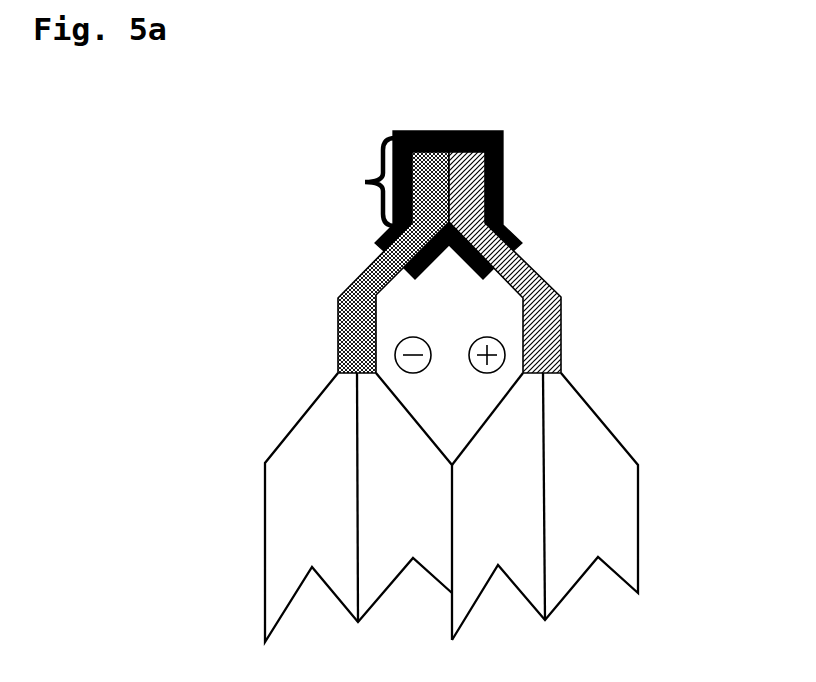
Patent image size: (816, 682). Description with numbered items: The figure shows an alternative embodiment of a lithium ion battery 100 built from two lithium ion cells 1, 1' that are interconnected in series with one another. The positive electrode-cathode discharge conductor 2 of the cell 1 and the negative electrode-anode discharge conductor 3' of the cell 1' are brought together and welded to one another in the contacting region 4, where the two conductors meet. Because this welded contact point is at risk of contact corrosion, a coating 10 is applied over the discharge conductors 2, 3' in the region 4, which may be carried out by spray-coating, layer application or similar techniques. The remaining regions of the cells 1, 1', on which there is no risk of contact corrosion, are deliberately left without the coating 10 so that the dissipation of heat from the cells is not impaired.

The lithium ion battery 100 is at (284, 242).
The coating 10 is at (520, 232).
The contacting region 4 is at (368, 182).
The discharge conductor (negative electrode-anode) 3' is at (336, 262).
The discharge conductor (positive electrode-cathode) 2 is at (562, 303).
The cell 1' is at (357, 495).
The cell 1 is at (546, 495).